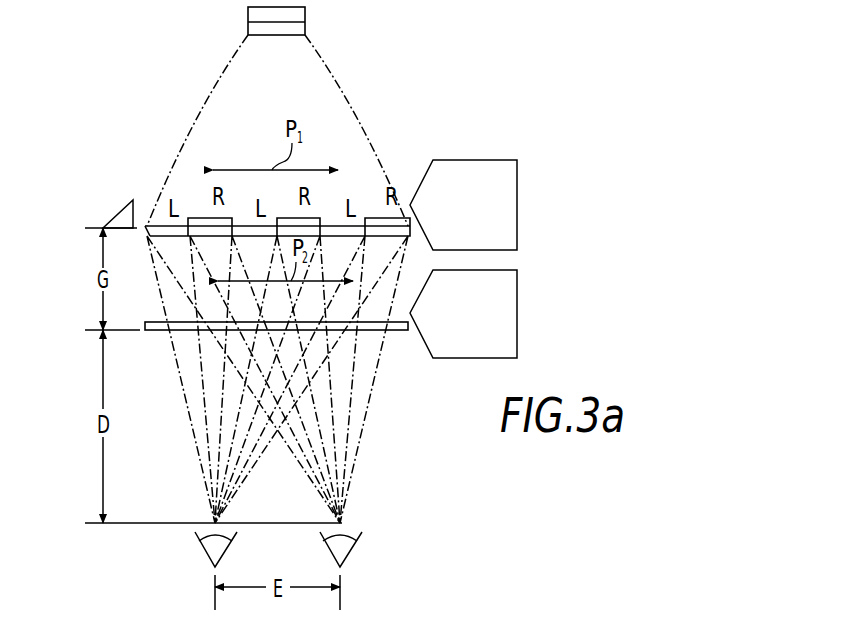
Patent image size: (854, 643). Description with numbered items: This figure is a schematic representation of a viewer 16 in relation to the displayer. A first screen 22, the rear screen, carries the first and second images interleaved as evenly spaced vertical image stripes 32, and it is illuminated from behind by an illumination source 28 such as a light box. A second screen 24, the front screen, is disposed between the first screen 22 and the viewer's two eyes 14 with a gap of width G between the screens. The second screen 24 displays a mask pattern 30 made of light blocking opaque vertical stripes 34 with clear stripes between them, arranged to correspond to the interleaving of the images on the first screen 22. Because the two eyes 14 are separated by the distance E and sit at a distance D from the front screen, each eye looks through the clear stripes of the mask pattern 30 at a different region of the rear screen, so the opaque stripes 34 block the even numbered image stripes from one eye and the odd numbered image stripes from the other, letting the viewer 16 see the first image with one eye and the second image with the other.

The illumination source 28 is at (305, 13).
The first screen 22 is at (517, 185).
The second screen 24 is at (517, 308).
The vertical image stripes 32 is at (113, 209).
The light blocking opaque vertical stripes 34 is at (160, 343).
The mask pattern 30 is at (400, 368).
The viewer 16 is at (392, 538).
The eyes 14 is at (203, 548).